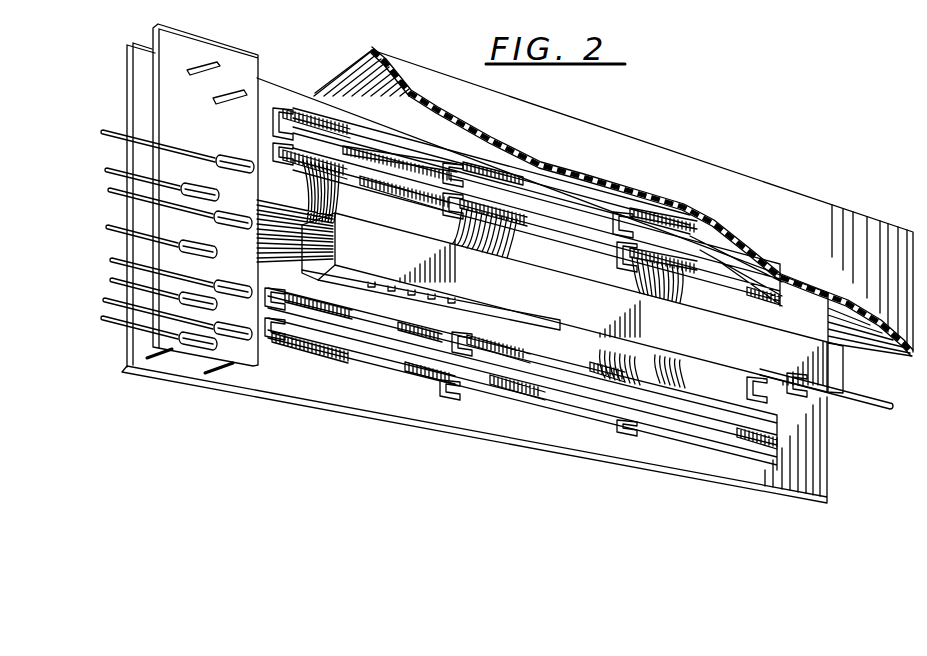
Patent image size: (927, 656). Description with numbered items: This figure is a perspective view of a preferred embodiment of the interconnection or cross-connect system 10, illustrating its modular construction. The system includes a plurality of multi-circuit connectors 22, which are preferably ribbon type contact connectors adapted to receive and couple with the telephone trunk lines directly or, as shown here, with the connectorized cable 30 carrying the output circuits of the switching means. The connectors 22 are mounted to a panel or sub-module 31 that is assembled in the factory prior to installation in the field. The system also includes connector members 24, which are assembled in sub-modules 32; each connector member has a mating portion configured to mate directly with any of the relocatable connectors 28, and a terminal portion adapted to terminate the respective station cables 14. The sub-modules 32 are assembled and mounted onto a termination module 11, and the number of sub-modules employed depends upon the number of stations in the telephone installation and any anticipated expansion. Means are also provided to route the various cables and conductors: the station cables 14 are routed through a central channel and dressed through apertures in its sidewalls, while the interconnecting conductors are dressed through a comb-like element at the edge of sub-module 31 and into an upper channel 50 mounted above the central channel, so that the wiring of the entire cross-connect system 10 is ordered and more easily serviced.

The cross-connect system 10 is at (847, 188).
The termination module 11 is at (827, 482).
The station cables 14 is at (880, 408).
The multi-circuit connectors 22 is at (226, 90).
The connector members 24 is at (387, 335).
The relocatable connectors 28 is at (492, 362).
The connectorized cable 30 is at (110, 228).
The sub-module 31 is at (233, 348).
The sub-modules 32 is at (682, 434).
The upper channel 50 is at (542, 301).